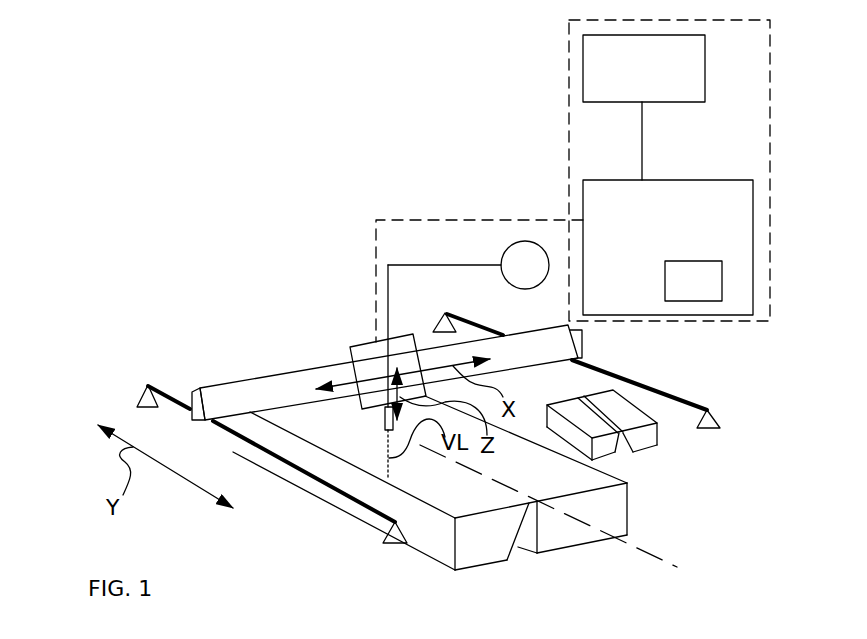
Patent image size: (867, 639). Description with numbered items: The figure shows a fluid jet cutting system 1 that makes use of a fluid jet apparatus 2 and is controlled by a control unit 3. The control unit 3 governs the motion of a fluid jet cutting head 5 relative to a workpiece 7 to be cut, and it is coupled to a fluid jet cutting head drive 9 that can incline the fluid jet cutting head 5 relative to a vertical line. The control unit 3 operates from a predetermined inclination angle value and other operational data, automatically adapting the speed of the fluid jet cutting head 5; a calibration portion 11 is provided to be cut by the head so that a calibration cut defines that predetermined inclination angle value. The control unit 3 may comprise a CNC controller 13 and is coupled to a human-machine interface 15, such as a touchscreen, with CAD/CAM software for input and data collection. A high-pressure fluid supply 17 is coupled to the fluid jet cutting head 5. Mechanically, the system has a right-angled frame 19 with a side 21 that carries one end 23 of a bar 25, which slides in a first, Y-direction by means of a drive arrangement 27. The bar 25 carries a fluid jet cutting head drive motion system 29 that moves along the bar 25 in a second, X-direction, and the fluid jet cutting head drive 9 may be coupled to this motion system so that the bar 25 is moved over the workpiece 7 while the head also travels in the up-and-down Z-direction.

The fluid jet cutting system 1 is at (774, 436).
The fluid jet apparatus 2 is at (237, 242).
The control unit 3 is at (571, 128).
The fluid jet cutting head 5 is at (385, 410).
The workpiece 7 is at (487, 553).
The fluid jet cutting head drive 9 is at (333, 414).
The calibration portion 11 is at (647, 450).
The CNC controller 13 is at (737, 180).
The human-machine interface 15 is at (583, 63).
The high-pressure fluid supply 17 is at (517, 243).
The right-angled frame 19 is at (640, 362).
The side 21 is at (177, 380).
The end 23 is at (207, 391).
The bar 25 is at (309, 367).
The drive arrangement 27 is at (191, 422).
The fluid jet cutting head drive motion system 29 is at (346, 345).